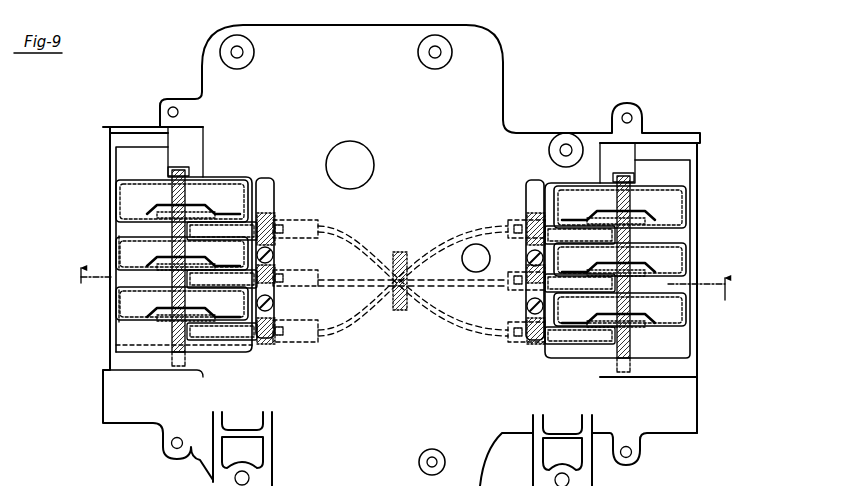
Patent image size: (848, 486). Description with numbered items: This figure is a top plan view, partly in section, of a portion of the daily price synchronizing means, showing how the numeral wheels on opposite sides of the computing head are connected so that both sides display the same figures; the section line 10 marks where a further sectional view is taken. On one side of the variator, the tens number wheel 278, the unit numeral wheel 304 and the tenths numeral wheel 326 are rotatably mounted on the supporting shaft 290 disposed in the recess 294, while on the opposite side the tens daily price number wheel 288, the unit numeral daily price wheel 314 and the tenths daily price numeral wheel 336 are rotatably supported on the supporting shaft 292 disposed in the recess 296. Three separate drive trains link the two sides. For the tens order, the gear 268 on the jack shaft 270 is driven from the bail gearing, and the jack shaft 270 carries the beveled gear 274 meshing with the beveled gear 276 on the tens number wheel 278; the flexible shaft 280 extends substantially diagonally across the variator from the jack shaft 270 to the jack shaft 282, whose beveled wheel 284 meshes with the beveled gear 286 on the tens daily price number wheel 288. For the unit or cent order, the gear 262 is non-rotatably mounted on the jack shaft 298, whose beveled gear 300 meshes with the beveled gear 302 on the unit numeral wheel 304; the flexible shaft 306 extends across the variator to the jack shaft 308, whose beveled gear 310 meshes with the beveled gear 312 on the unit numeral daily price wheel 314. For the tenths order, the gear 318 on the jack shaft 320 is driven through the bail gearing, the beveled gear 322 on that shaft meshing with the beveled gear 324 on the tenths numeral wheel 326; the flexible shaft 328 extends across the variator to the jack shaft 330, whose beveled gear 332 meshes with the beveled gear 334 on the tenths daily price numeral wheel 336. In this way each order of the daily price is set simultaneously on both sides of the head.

The section line 10 is at (399, 274).
The gear 262 is at (280, 274).
The gear 268 is at (268, 214).
The jack shaft 270 is at (263, 185).
The beveled gear 274 is at (207, 205).
The beveled gear 276 is at (165, 225).
The tens number wheel 278 is at (114, 190).
The flexible shaft 280 is at (345, 242).
The jack shaft 282 is at (548, 350).
The beveled wheel 284 is at (598, 344).
The beveled gear 286 is at (643, 326).
The tens daily price number wheel 288 is at (692, 313).
The supporting shaft 290 is at (176, 343).
The supporting shaft 292 is at (631, 190).
The recess 294 is at (118, 366).
The recess 296 is at (686, 366).
The jack shaft 298 is at (276, 298).
The beveled gear 300 is at (197, 291).
The beveled gear 302 is at (162, 273).
The unit numeral wheel 304 is at (115, 240).
The flexible shaft 306 is at (338, 286).
The jack shaft 308 is at (524, 297).
The beveled gear 310 is at (580, 285).
The beveled gear 312 is at (725, 284).
The unit numeral daily price wheel 314 is at (690, 250).
The gear 318 is at (272, 344).
The jack shaft 320 is at (235, 343).
The beveled gear 322 is at (203, 347).
The beveled gear 324 is at (160, 320).
The tenths numeral wheel 326 is at (116, 304).
The flexible shaft 328 is at (348, 326).
The jack shaft 330 is at (548, 217).
The beveled gear 332 is at (596, 222).
The beveled gear 334 is at (688, 228).
The tenths daily price numeral wheel 336 is at (688, 204).